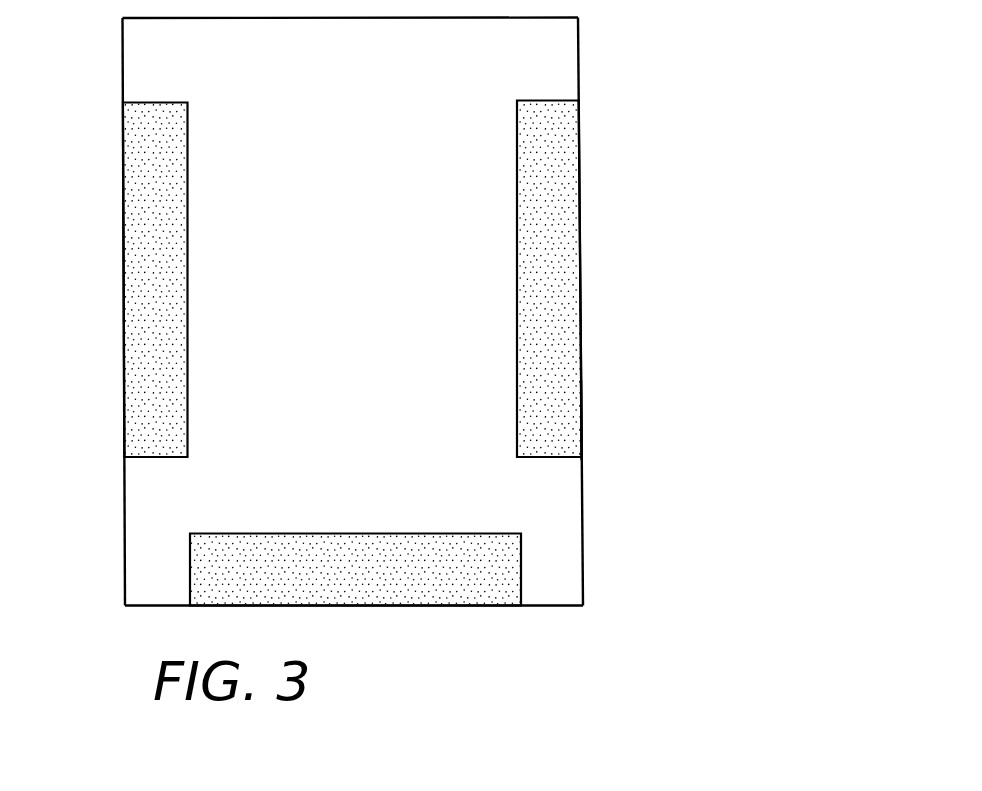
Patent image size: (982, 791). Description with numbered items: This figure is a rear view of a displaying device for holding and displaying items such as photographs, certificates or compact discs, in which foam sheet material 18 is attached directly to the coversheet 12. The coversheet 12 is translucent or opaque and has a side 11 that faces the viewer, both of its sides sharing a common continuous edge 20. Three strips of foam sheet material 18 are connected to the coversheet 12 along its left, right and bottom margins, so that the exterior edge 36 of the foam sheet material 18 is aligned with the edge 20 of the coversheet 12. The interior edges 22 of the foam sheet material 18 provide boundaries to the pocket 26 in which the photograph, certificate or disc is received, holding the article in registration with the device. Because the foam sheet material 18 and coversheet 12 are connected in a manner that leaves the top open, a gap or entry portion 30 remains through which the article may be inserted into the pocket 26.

The outward side 11 is at (142, 62).
The coversheet 12 is at (560, 60).
The foam sheet material 18 is at (142, 231).
The continuous edge 20 is at (582, 483).
The interior edges 22 is at (188, 199).
The pocket 26 is at (372, 141).
The entry portion 30 is at (474, 42).
The exterior edge 36 is at (582, 421).